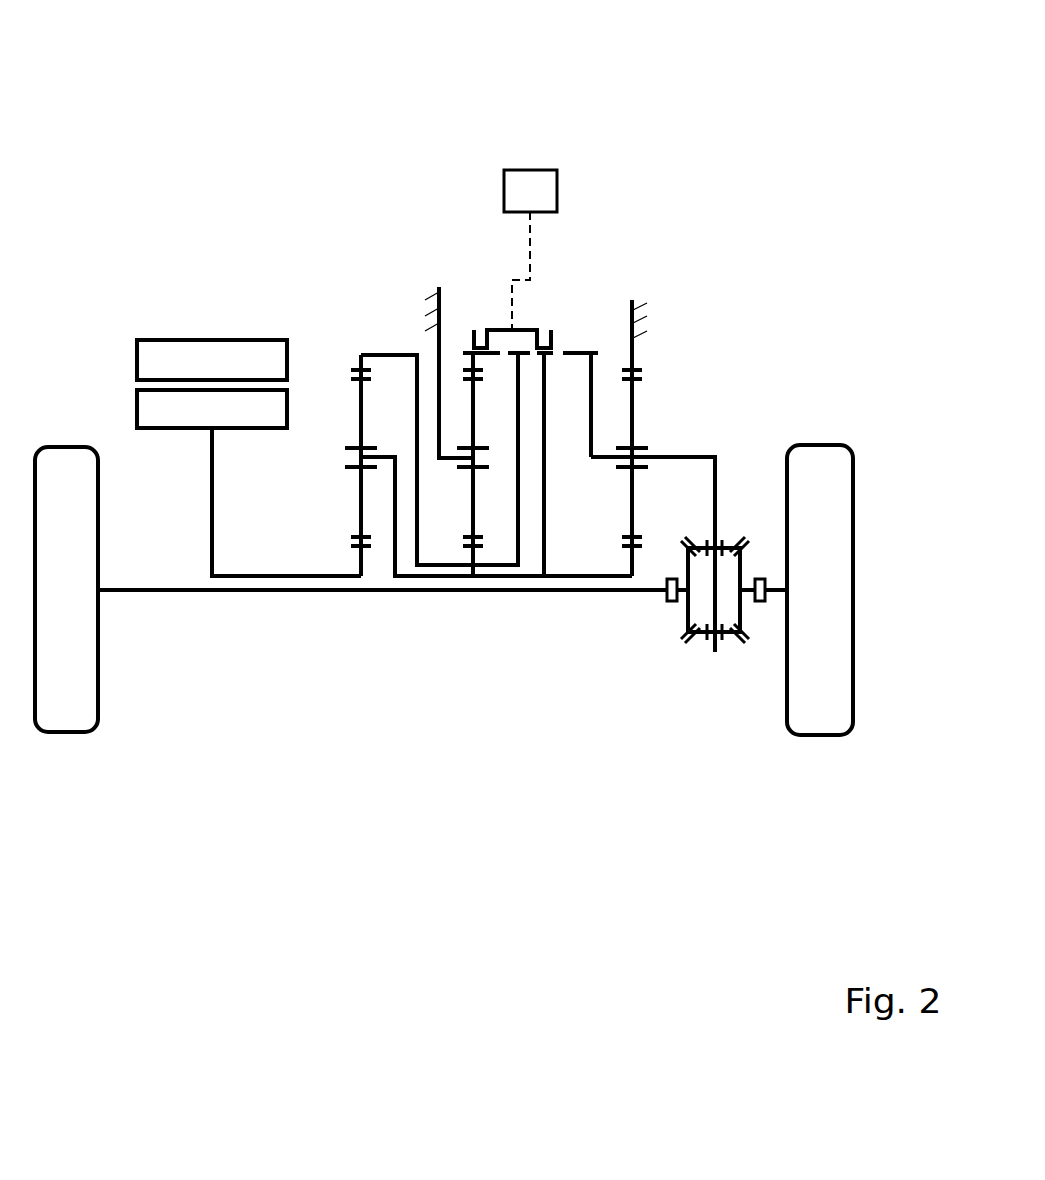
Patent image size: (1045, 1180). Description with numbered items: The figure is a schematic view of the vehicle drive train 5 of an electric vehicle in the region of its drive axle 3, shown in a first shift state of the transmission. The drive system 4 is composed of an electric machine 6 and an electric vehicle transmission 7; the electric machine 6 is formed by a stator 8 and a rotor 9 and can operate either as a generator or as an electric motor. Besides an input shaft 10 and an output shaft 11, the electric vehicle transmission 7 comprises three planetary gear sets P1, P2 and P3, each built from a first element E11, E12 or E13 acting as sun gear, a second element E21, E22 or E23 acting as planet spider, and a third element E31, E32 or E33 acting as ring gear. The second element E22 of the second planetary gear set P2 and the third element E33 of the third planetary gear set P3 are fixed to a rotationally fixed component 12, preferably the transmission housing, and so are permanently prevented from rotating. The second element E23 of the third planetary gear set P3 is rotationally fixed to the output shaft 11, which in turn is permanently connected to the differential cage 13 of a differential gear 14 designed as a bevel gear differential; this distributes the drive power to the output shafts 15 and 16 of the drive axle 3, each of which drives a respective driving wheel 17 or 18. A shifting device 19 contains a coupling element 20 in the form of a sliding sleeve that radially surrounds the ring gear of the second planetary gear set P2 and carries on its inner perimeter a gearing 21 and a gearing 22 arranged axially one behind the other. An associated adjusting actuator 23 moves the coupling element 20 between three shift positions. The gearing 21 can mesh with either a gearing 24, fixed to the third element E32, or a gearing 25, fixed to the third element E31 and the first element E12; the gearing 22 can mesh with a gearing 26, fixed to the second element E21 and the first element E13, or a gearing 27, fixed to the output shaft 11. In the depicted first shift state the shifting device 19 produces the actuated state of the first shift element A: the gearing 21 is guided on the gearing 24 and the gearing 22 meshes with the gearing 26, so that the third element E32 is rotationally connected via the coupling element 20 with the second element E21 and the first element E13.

The drive axle 3 is at (117, 708).
The drive system 4 is at (424, 185).
The vehicle drive train 5 is at (246, 185).
The electric machine 6 is at (174, 350).
The electric vehicle transmission 7 is at (585, 125).
The stator 8 is at (211, 190).
The rotor 9 is at (153, 410).
The input shaft 10 is at (250, 577).
The output shaft 11 is at (703, 457).
The rotationally fixed component 12 is at (440, 292).
The differential cage 13 is at (803, 689).
The differential gear 14 is at (703, 645).
The output shaft 15 is at (177, 592).
The output shaft 16 is at (773, 593).
The driving wheel 17 is at (58, 463).
The driving wheel 18 is at (823, 532).
The shifting device 19 is at (500, 313).
The coupling element 20 is at (545, 345).
The gearing 21 is at (480, 345).
The gearing 22 is at (550, 332).
The adjusting actuator 23 is at (532, 182).
The gearing 24 is at (492, 357).
The gearing 25 is at (523, 357).
The gearing 26 is at (547, 355).
The gearing 27 is at (595, 350).
The first shift element A is at (527, 312).
The first element of the first planetary gear set E11 is at (357, 562).
The second element of the first planetary gear set E21 is at (361, 453).
The third element of the first planetary gear set E31 is at (352, 372).
The first element of the second planetary gear set E12 is at (470, 557).
The second element of the second planetary gear set E22 is at (468, 458).
The third element of the second planetary gear set E32 is at (468, 360).
The first element of the third planetary gear set E13 is at (633, 563).
The second element of the third planetary gear set E23 is at (637, 453).
The third element of the third planetary gear set E33 is at (637, 358).
The first planetary gear set P1 is at (362, 612).
The second planetary gear set P2 is at (473, 612).
The third planetary gear set P3 is at (632, 612).